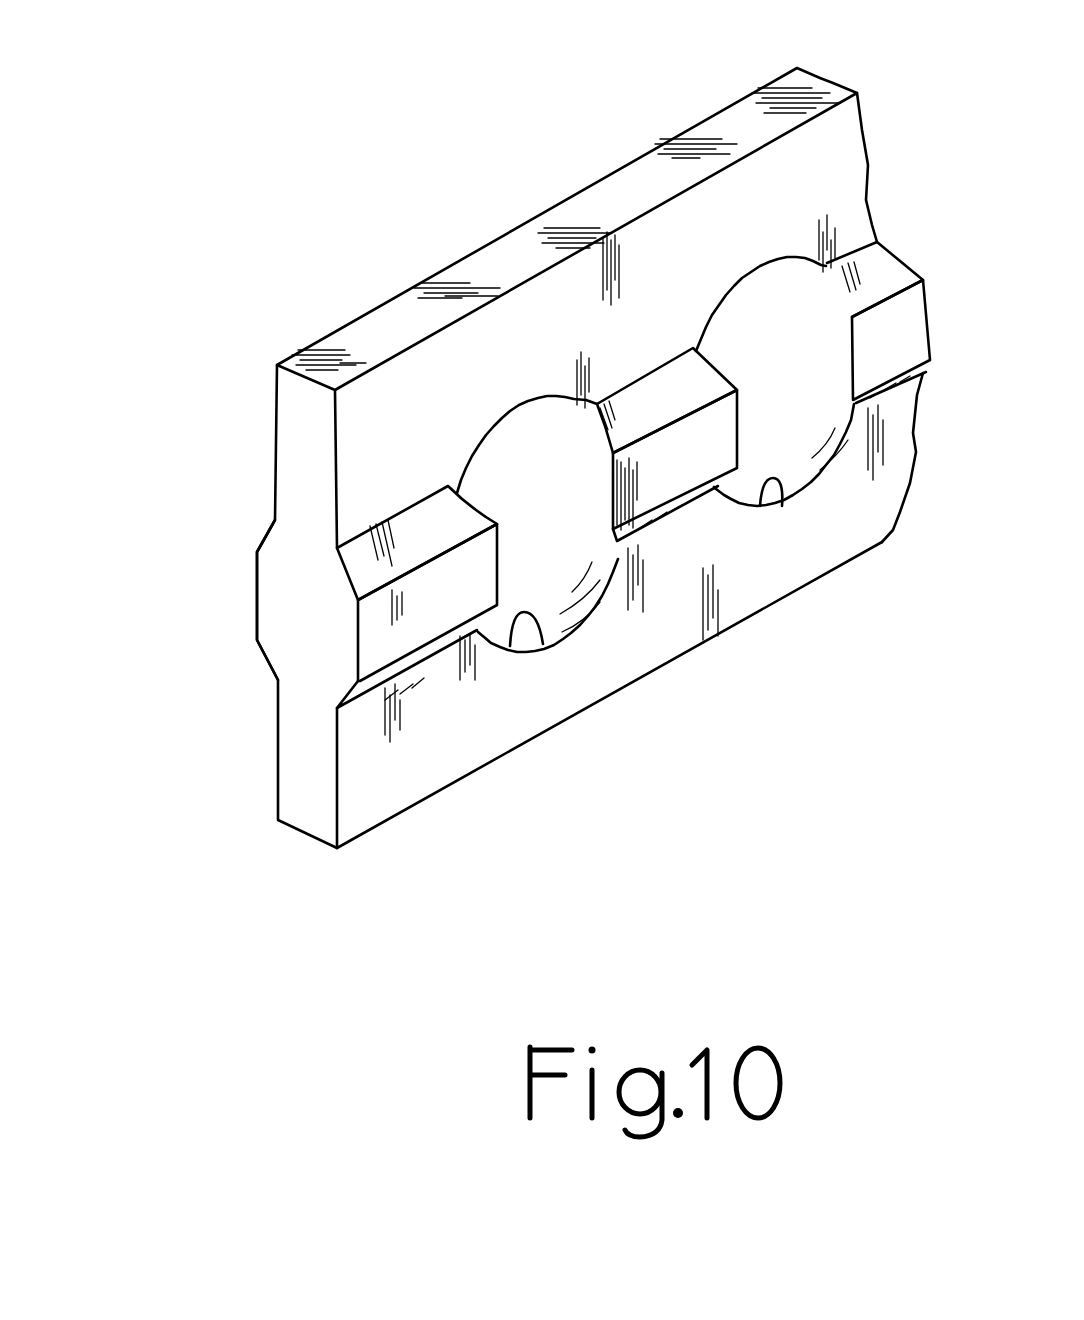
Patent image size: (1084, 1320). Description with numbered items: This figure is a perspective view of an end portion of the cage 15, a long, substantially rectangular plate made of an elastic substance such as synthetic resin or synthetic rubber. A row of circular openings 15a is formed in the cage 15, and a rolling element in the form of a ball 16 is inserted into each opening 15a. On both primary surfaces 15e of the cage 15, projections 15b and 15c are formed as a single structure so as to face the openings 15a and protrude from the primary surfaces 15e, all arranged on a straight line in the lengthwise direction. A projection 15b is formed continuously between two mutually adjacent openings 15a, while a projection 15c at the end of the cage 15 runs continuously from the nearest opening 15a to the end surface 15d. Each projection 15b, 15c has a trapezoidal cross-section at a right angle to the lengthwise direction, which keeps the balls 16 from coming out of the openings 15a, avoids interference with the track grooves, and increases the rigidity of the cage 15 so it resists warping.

The cage 15 is at (264, 300).
The circular opening 15a is at (538, 650).
The projection 15b is at (672, 477).
The projection 15c is at (420, 620).
The end surface 15d is at (313, 795).
The primary surface 15e is at (278, 737).
The ball 16 is at (535, 457).